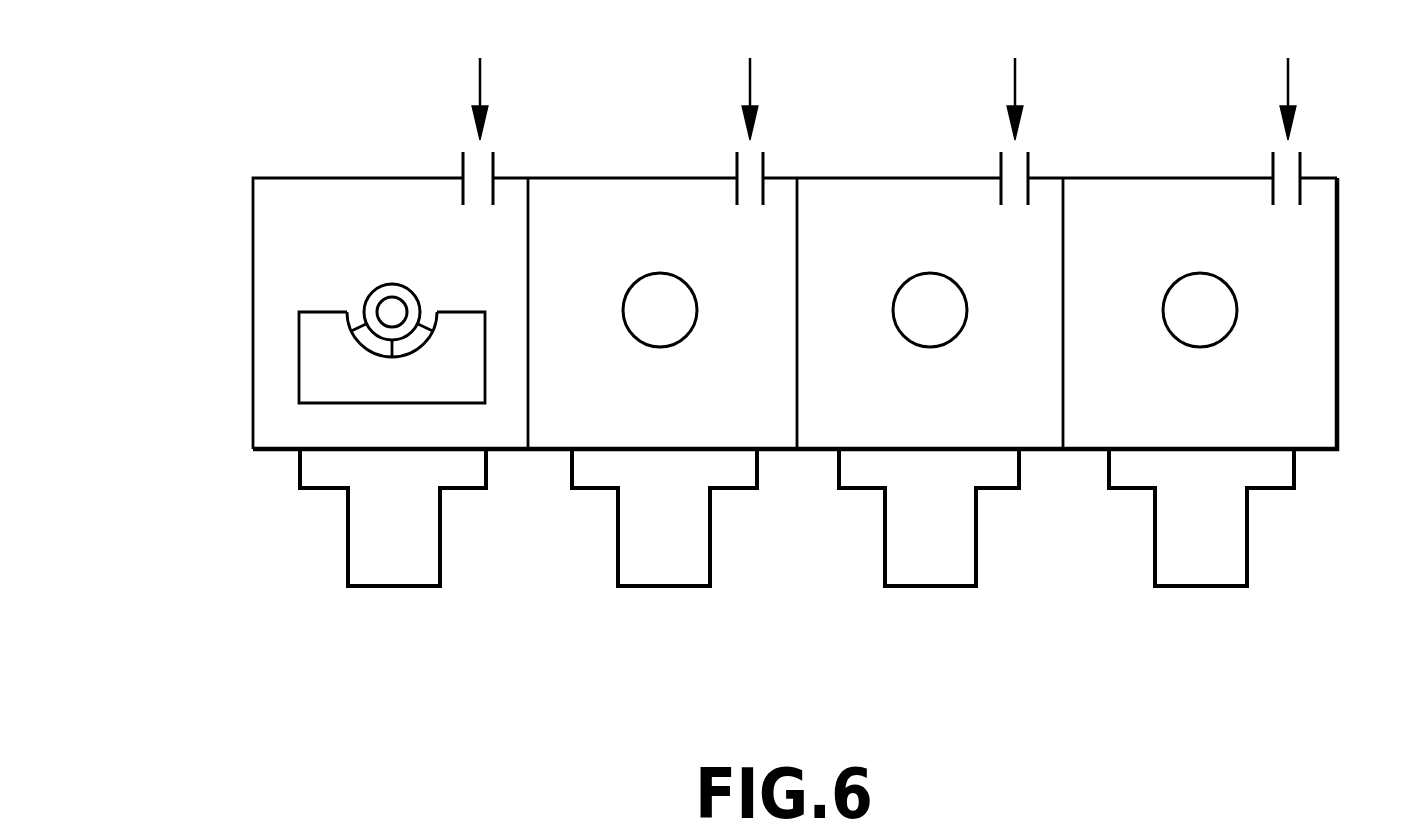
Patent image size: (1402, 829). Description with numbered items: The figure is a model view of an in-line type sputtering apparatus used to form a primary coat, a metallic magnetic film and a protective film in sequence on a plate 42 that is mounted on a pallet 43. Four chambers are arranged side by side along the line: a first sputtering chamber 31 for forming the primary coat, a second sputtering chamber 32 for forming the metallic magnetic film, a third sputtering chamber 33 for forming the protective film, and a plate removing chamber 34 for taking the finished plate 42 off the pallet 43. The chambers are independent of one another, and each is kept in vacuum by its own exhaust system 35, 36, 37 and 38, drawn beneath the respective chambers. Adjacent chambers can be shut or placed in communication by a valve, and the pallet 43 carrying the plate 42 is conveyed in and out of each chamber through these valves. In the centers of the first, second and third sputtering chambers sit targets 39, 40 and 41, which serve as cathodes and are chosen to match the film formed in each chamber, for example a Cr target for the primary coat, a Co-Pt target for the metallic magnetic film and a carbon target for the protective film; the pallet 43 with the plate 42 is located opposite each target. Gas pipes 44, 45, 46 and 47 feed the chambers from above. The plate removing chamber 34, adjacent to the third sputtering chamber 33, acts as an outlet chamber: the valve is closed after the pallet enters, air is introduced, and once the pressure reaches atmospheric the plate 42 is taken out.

The first sputtering chamber 31 is at (1177, 178).
The second sputtering chamber 32 is at (908, 178).
The third sputtering chamber 33 is at (645, 178).
The plate removing chamber 34 is at (347, 178).
The exhaust system 35 is at (1198, 655).
The exhaust system 36 is at (933, 657).
The exhaust system 37 is at (668, 652).
The exhaust system 38 is at (393, 655).
The target 39 is at (1313, 548).
The target 40 is at (1058, 548).
The target 41 is at (777, 555).
The plate 42 is at (372, 292).
The pallet 43 is at (299, 347).
The gas pipe 44 is at (1300, 168).
The gas pipe 45 is at (1028, 168).
The gas pipe 46 is at (763, 168).
The gas pipe 47 is at (493, 168).